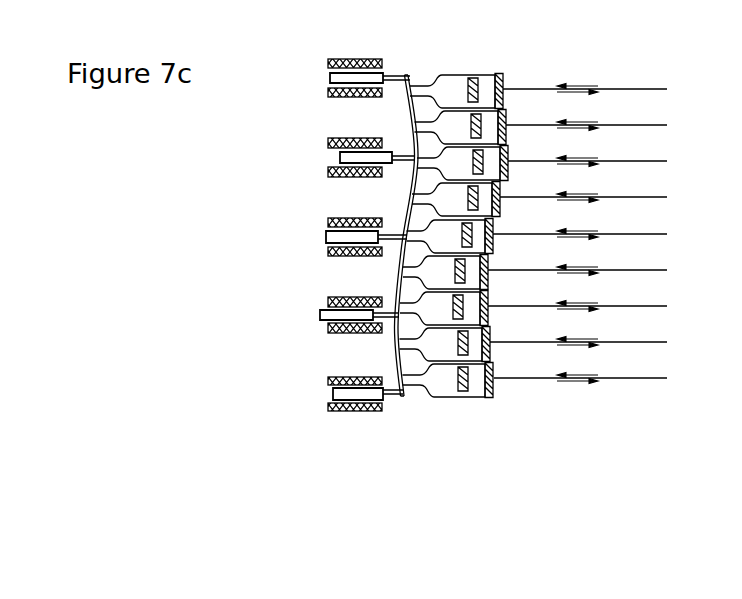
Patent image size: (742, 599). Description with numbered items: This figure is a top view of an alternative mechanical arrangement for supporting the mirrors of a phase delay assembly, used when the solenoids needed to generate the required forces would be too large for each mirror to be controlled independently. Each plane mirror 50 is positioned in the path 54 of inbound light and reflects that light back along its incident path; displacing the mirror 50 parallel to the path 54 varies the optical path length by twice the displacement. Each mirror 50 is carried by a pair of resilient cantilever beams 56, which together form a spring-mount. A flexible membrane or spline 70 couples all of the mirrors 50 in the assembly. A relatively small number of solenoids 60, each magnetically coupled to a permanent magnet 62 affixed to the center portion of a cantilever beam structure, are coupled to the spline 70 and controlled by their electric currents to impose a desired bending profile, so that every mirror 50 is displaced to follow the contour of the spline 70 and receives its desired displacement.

The plane mirror 50 is at (481, 405).
The path of inbound light 54 is at (642, 379).
The resilient cantilever beams 56 is at (465, 384).
The solenoid 60 is at (362, 58).
The permanent magnet 62 is at (330, 77).
The flexible membrane or spline 70 is at (411, 108).